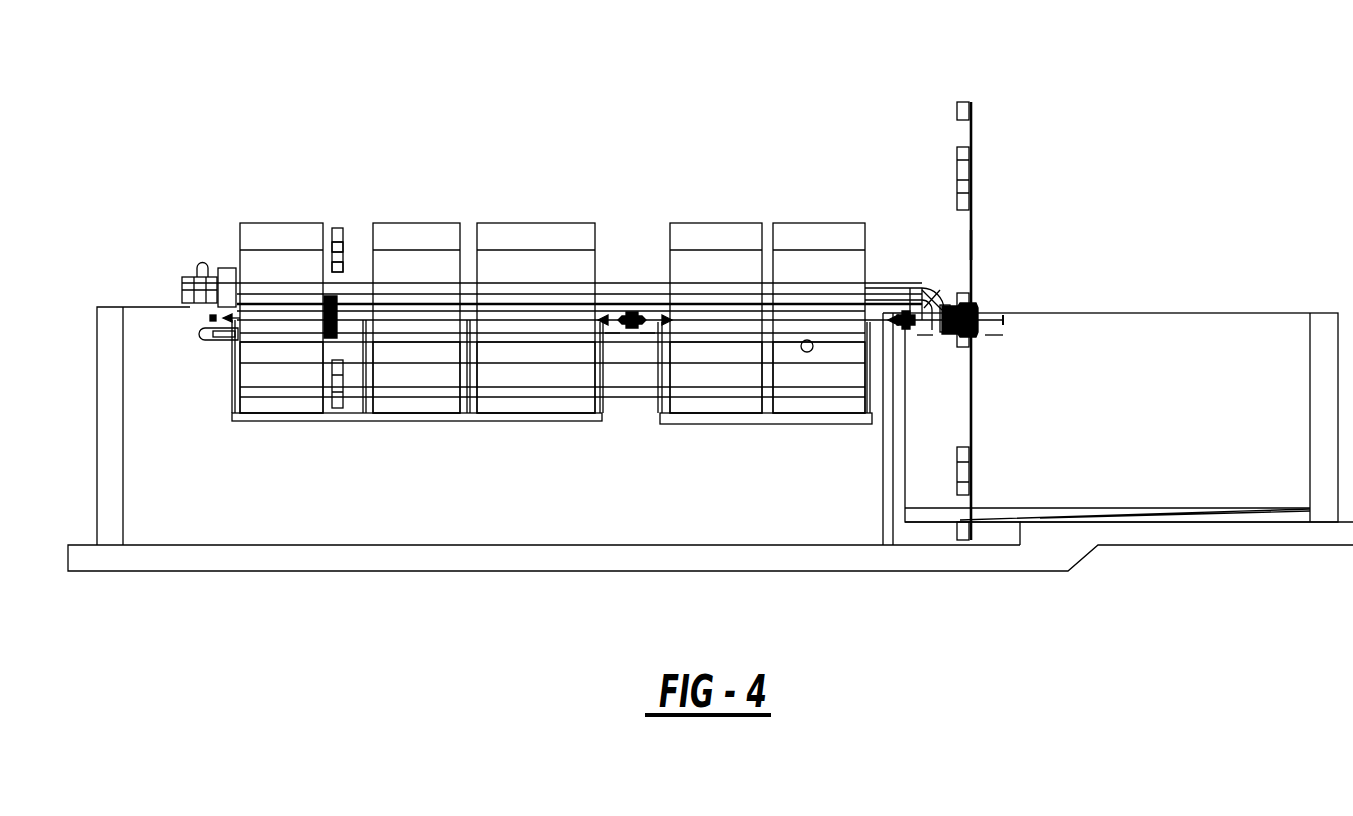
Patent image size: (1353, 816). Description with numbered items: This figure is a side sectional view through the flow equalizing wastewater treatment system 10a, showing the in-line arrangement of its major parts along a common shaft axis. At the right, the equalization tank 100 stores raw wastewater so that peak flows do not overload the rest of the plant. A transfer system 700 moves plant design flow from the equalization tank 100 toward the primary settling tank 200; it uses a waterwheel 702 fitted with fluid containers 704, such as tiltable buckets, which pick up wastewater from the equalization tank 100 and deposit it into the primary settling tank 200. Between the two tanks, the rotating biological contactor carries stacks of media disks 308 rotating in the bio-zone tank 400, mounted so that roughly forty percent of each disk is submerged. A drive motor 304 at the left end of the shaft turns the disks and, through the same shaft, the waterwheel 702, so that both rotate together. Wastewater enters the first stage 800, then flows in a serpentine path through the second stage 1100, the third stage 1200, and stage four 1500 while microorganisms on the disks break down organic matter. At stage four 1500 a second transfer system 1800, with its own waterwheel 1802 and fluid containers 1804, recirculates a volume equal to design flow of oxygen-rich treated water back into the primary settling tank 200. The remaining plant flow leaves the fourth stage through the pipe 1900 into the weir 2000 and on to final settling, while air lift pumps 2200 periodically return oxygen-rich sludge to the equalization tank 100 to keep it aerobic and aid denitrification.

The flow equalizing wastewater treatment system 10a is at (893, 66).
The equalization tank 100 is at (1193, 296).
The primary settling tank 200 is at (150, 290).
The drive motor 304 is at (227, 298).
The media disks 308 is at (283, 380).
The bio-zone tank 400 is at (357, 420).
The transfer system 700 is at (994, 135).
The waterwheel 702 is at (972, 245).
The fluid containers 704 is at (960, 182).
The first stage 800 is at (742, 216).
The second stage 1100 is at (549, 212).
The third stage 1200 is at (456, 210).
The stage four 1500 is at (270, 213).
The transfer system 1800 is at (336, 214).
The waterwheel 1802 is at (346, 248).
The fluid containers 1804 is at (345, 270).
The pipe 1900 is at (207, 340).
The weir 2000 is at (187, 282).
The air lift pumps 2200 is at (202, 268).